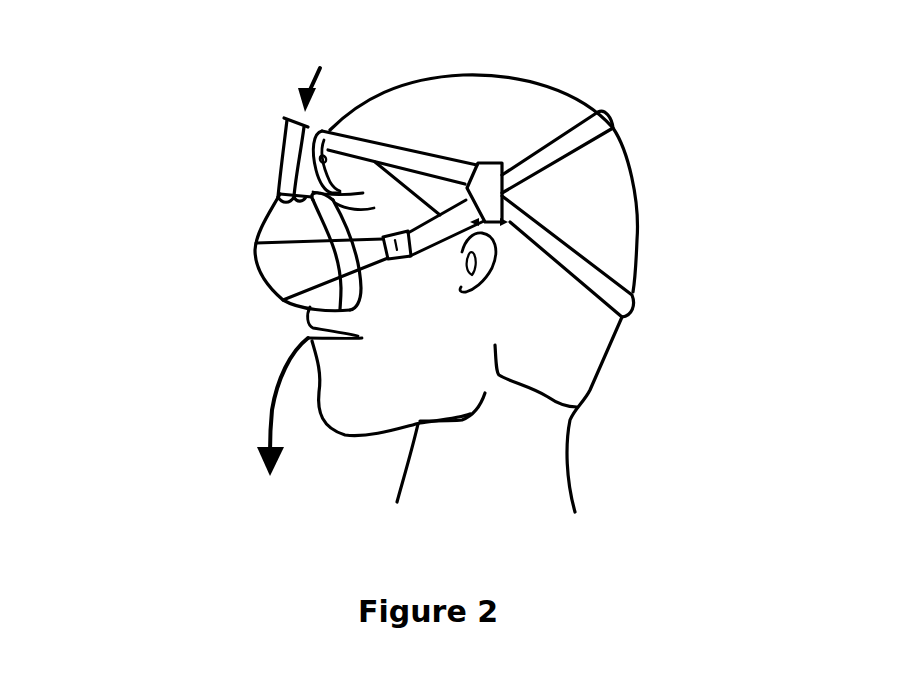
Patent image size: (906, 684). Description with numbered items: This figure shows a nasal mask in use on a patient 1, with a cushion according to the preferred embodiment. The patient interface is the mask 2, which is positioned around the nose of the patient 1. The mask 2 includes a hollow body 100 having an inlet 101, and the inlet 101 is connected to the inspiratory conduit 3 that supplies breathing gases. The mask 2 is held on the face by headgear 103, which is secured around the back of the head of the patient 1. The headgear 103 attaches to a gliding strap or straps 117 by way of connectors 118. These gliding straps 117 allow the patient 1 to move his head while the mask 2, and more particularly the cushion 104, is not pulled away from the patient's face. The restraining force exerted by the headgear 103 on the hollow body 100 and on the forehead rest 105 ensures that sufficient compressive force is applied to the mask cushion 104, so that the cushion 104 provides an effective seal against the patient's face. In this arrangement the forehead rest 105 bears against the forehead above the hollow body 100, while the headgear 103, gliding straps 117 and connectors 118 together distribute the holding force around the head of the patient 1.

The patient 1 is at (637, 220).
The mask 2 is at (204, 187).
The inspiratory conduit 3 is at (285, 119).
The hollow body 100 is at (256, 243).
The inlet 101 is at (270, 198).
The headgear 103 is at (582, 133).
The cushion 104 is at (278, 198).
The forehead rest 105 is at (330, 128).
The gliding straps 117 is at (328, 277).
The connectors 118 is at (398, 229).